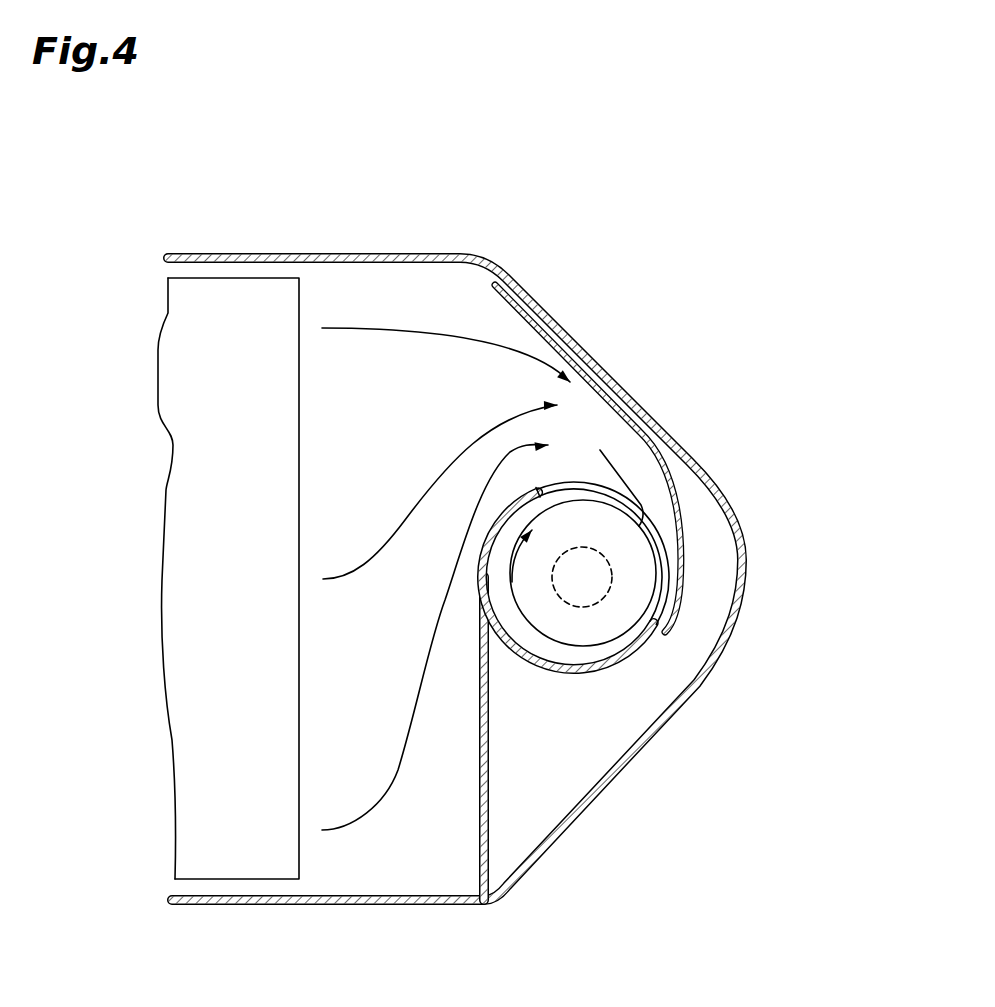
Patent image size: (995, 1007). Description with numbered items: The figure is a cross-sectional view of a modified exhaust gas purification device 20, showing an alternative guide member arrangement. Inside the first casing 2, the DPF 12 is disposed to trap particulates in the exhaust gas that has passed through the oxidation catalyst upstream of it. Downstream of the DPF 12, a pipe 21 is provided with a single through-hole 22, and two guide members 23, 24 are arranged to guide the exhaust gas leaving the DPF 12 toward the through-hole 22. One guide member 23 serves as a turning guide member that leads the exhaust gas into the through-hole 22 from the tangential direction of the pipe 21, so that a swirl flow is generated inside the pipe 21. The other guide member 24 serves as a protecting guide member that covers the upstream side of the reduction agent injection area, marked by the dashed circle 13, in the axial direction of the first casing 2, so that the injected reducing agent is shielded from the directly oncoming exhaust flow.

The first casing 2 is at (408, 250).
The DPF 12 is at (227, 318).
The reducing agent injection nozzle 13 is at (572, 540).
The exhaust gas purification device 20 is at (638, 197).
The pipe 21 is at (610, 672).
The through-hole 22 is at (573, 483).
The guide member 23 is at (480, 858).
The guide member 24 is at (511, 301).